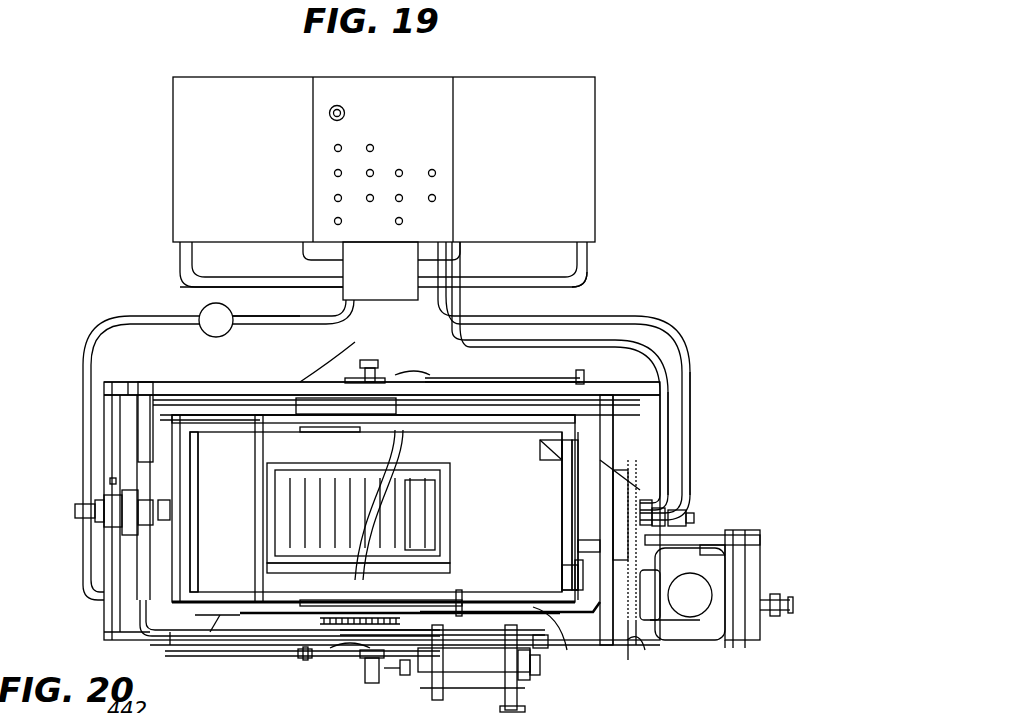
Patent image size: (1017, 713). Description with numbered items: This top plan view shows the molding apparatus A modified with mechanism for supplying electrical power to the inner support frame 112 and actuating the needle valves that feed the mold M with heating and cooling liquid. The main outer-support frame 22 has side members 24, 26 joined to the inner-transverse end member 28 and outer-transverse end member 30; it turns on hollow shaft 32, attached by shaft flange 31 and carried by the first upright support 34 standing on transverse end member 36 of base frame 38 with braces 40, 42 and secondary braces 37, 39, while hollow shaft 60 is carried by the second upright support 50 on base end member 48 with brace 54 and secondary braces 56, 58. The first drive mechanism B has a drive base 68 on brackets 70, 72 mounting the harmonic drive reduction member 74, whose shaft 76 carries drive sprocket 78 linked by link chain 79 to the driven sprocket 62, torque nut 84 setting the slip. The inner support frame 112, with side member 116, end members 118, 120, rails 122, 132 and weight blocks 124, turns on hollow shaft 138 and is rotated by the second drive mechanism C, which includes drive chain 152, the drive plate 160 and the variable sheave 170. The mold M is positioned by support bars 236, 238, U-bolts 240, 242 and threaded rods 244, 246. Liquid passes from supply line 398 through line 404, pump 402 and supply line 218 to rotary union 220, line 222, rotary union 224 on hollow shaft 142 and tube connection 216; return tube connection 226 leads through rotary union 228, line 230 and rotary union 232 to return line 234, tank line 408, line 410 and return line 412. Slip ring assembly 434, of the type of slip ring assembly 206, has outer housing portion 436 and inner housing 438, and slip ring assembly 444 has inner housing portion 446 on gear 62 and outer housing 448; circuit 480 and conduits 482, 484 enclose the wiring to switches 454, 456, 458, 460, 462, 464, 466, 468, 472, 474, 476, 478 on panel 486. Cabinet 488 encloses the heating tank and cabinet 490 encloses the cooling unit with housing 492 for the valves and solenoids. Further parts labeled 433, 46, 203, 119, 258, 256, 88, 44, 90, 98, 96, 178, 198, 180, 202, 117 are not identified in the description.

The panel 486 is at (425, 90).
The cabinet 490 is at (173, 152).
The cabinet 488 is at (582, 120).
The terminal 433 is at (345, 108).
The switch 454 is at (341, 145).
The switch 456 is at (373, 145).
The switch 458 is at (334, 174).
The switch 460 is at (374, 170).
The switch 462 is at (403, 171).
The switch 464 is at (436, 174).
The switch 466 is at (334, 198).
The switch 468 is at (366, 199).
The switch 472 is at (436, 199).
The switch 474 is at (334, 222).
The switch 478 is at (399, 225).
The return line 412 is at (310, 258).
The switch 476 is at (388, 296).
The supply line 398 is at (458, 258).
The line 410 is at (180, 265).
The tank line 408 is at (585, 284).
The housing 492 is at (362, 296).
The conduit 484 is at (448, 307).
The return line 234 is at (521, 316).
The supply line 218 is at (83, 381).
The pump 402 is at (201, 308).
The line 404 is at (267, 315).
The base frame 38 is at (102, 640).
The transverse end member 36 is at (104, 610).
The brace 40 is at (112, 583).
The outer-transverse end member 30 is at (112, 415).
The brace 42 is at (112, 430).
The main outer-support frame 22 is at (150, 382).
The frame member 46 is at (128, 382).
The side member 24 is at (242, 382).
The side member 116 is at (200, 410).
The secondary brace 39 is at (222, 418).
The U-bolts 240 is at (275, 410).
The outer transverse end member 120 is at (188, 465).
The first rail 132 is at (190, 480).
The threaded rod 246 is at (373, 428).
The slip ring assembly 434 is at (334, 408).
The outer housing portion 436 is at (326, 442).
The return tube connection 226 is at (372, 450).
The circuit 480 is at (395, 500).
The mold M is at (432, 505).
The tube connection 216 is at (365, 574).
The U-bolts 242 is at (462, 603).
The threaded rod 244 is at (256, 578).
The wall 203 is at (170, 528).
The support bar 236 is at (255, 532).
The line 222 is at (162, 525).
The shaft flange 31 is at (165, 500).
The hollow shaft 32 is at (110, 502).
The slip ring assembly 206 is at (110, 480).
The rotary union 220 is at (75, 511).
The first upright support 34 is at (112, 522).
The apparatus A is at (82, 598).
The rotary union 228 is at (370, 360).
The hollow shaft 138 is at (350, 378).
The inner housing 438 is at (317, 380).
The hose 119 is at (425, 380).
The line 230 is at (452, 378).
The conduit 482 is at (545, 395).
The inner-transverse end member 28 is at (607, 410).
The weight blocks 124 is at (562, 470).
The secondary brace 58 is at (540, 448).
The brace 258 is at (515, 461).
The inner transverse end member 118 is at (572, 493).
The first rail member 122 is at (575, 505).
The support bar 238 is at (470, 532).
The inner housing portion 446 is at (628, 535).
The link chain 79 is at (578, 548).
The bracket 256 is at (562, 578).
The torque nut 84 is at (575, 575).
The outer support frame driven sprocket 62 is at (628, 470).
The base end member 48 is at (690, 418).
The brace 54 is at (669, 440).
The slip ring assembly 444 is at (665, 470).
The outer housing 448 is at (690, 480).
The second upright support 50 is at (668, 500).
The hollow shaft 60 is at (690, 505).
The rotary union 232 is at (694, 518).
The drive base 68 is at (700, 538).
The bracket 88 is at (745, 548).
The bracket 72 is at (755, 555).
The bracket 70 is at (778, 594).
The harmonic drive reduction member 74 is at (688, 590).
The chain 44 is at (630, 640).
The secondary brace 56 is at (530, 632).
The drive sprocket 78 is at (622, 640).
The shaft 76 is at (650, 648).
The pulley 90 is at (722, 642).
The belt 98 is at (730, 645).
The pulley 96 is at (730, 645).
The first drive mechanism B is at (712, 650).
The drive plate 160 is at (483, 653).
The leg 178 is at (472, 668).
The bracket 198 is at (528, 660).
The bracket 180 is at (535, 685).
The second drive mechanism C is at (565, 685).
The rotary union 224 is at (370, 683).
The hollow shaft 142 is at (395, 672).
The variable sheave 170 is at (408, 678).
The conduit 202 is at (290, 660).
The side member 26 is at (265, 645).
The secondary brace 37 is at (220, 640).
The inner support frame 112 is at (200, 640).
The drive chain 152 is at (308, 660).
The hose 117 is at (330, 660).